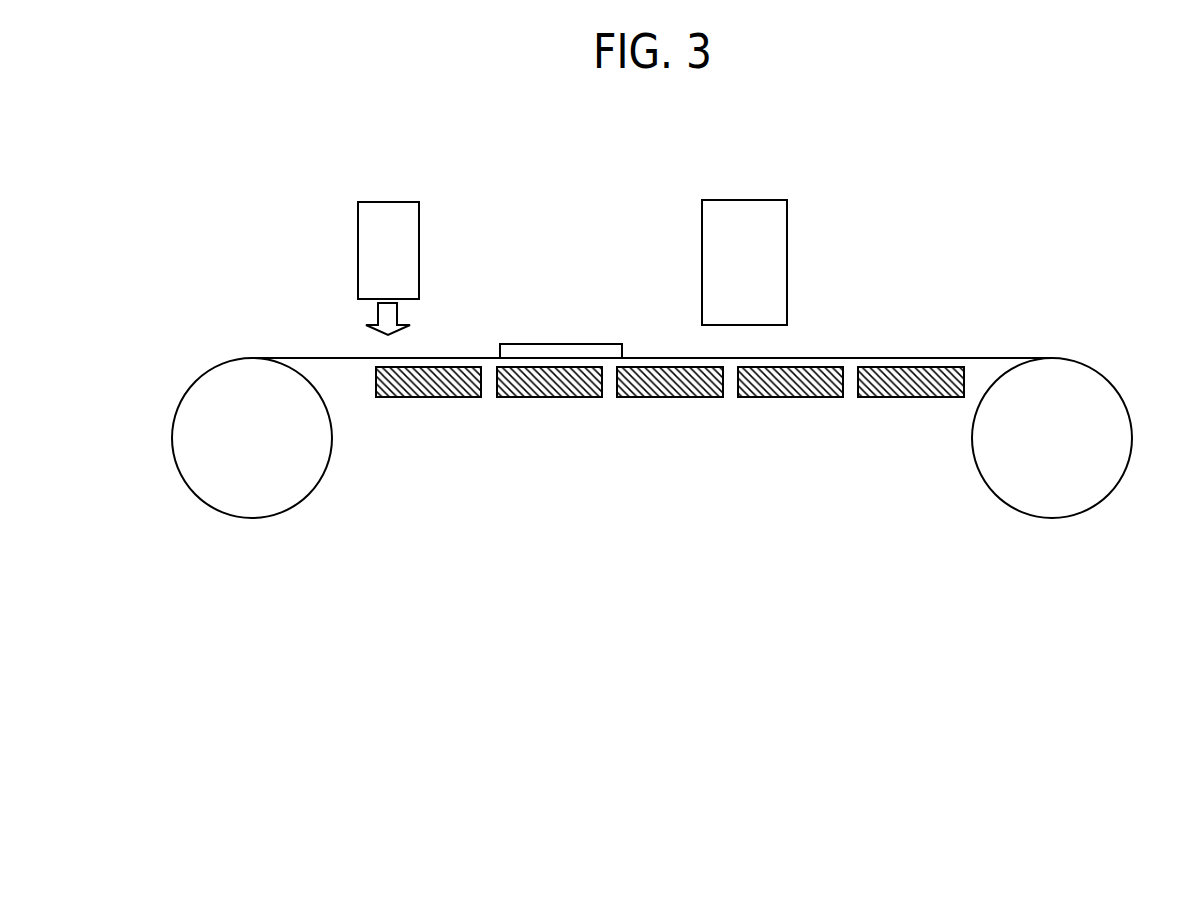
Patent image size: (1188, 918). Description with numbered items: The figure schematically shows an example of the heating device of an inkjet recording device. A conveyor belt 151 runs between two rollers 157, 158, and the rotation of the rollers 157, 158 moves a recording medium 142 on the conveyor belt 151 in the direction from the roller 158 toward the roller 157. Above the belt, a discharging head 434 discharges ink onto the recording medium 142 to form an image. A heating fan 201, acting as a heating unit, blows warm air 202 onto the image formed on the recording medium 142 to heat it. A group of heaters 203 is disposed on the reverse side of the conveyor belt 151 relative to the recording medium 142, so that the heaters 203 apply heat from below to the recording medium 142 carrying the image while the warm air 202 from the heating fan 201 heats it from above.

The conveyor belt 151 is at (858, 358).
The roller 157 is at (273, 515).
The roller 158 is at (1077, 515).
The heaters 203 is at (563, 397).
The recording medium 142 is at (562, 344).
The heating fan 201 is at (380, 202).
The warm air 202 is at (353, 311).
The discharging head 434 is at (750, 200).